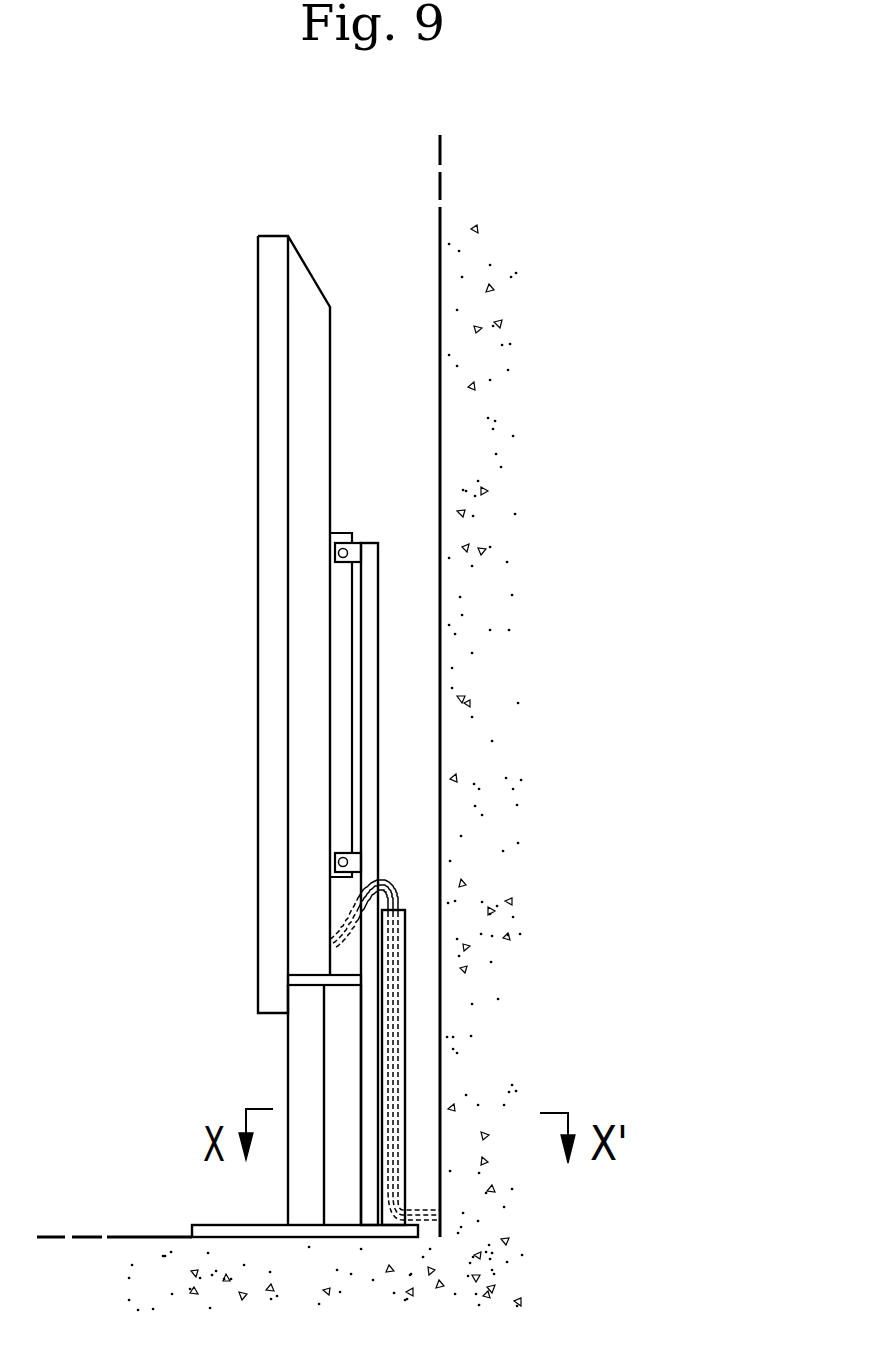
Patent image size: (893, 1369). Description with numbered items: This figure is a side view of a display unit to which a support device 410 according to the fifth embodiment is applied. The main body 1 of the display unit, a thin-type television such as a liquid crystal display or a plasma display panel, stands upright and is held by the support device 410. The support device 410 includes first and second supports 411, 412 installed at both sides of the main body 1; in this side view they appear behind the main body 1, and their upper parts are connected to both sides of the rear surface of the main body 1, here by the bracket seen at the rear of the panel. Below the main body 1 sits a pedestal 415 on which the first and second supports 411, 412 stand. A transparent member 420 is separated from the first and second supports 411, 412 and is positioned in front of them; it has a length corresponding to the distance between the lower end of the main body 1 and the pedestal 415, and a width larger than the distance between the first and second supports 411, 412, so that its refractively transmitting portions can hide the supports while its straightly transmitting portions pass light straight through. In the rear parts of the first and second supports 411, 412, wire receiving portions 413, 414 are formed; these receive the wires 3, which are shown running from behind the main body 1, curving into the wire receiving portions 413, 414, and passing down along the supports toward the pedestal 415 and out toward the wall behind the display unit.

The main body 1 is at (268, 305).
The wires 3 is at (393, 881).
The support device 410 is at (237, 1066).
The first support 411 is at (509, 879).
The second support 412 is at (368, 718).
The wire receiving portion 413 is at (532, 1067).
The wire receiving portion 414 is at (405, 1067).
The pedestal 415 is at (212, 1230).
The transparent member 420 is at (295, 1049).